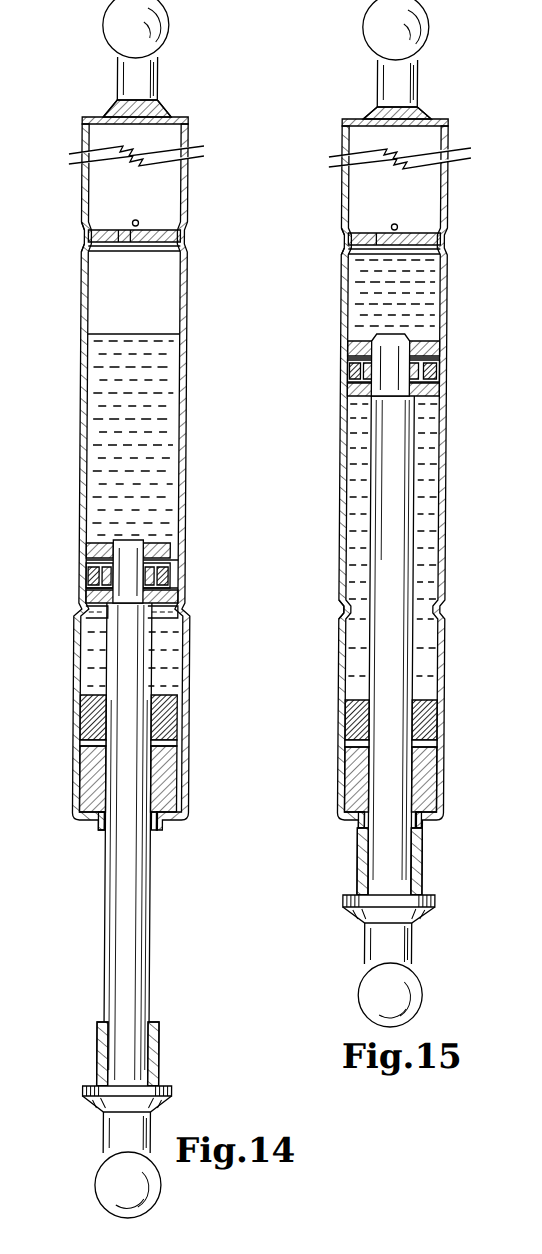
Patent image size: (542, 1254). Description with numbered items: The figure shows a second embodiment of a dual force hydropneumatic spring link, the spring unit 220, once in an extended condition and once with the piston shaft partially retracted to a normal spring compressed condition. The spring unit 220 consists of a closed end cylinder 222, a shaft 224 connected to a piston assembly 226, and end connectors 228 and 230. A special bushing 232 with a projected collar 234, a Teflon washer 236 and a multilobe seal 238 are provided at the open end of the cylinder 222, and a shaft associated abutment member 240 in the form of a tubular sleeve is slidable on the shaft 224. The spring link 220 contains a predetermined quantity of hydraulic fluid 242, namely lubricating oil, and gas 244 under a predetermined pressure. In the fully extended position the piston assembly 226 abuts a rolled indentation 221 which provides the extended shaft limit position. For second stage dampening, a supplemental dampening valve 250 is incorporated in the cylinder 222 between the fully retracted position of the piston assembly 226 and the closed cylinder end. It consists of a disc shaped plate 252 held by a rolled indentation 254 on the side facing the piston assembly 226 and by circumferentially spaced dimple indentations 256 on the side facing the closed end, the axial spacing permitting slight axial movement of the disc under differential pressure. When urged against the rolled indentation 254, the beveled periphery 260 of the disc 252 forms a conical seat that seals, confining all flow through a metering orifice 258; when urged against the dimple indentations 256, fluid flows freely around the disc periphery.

In FIG. 14, the spring unit 220 is at (198, 683).
In FIG. 15, the spring unit 220 is at (460, 688).
In FIG. 14, the rolled indentation 221 is at (188, 607).
In FIG. 15, the rolled indentation 221 is at (450, 612).
In FIG. 14, the closed end cylinder 222 is at (188, 463).
In FIG. 15, the closed end cylinder 222 is at (448, 438).
In FIG. 14, the shaft 224 is at (149, 920).
In FIG. 15, the shaft 224 is at (411, 552).
In FIG. 14, the piston assembly 226 is at (178, 551).
In FIG. 15, the piston assembly 226 is at (440, 347).
In FIG. 14, the end connector 228 is at (108, 1165).
In FIG. 15, the end connector 228 is at (366, 990).
In FIG. 14, the end connector 230 is at (169, 25).
In FIG. 15, the end connector 230 is at (429, 26).
In FIG. 14, the special bushing 232 is at (170, 778).
In FIG. 15, the special bushing 232 is at (436, 782).
In FIG. 14, the projected collar 234 is at (166, 826).
In FIG. 15, the projected collar 234 is at (427, 826).
In FIG. 14, the Teflon washer 236 is at (163, 742).
In FIG. 15, the Teflon washer 236 is at (432, 742).
In FIG. 14, the multilobe seal 238 is at (170, 715).
In FIG. 15, the multilobe seal 238 is at (437, 722).
In FIG. 14, the abutment member 240 is at (165, 1045).
In FIG. 15, the abutment member 240 is at (428, 864).
In FIG. 14, the hydraulic fluid 242 is at (168, 410).
In FIG. 15, the hydraulic fluid 242 is at (360, 298).
In FIG. 14, the gas 244 is at (174, 282).
In FIG. 15, the gas 244 is at (438, 188).
In FIG. 14, the supplemental dampening valve 250 is at (178, 229).
In FIG. 15, the supplemental dampening valve 250 is at (426, 229).
In FIG. 14, the disc shaped plate 252 is at (157, 230).
In FIG. 14, the rolled indentation 254 is at (89, 250).
In FIG. 15, the rolled indentation 254 is at (450, 248).
In FIG. 14, the dimple indentations 256 is at (84, 224).
In FIG. 15, the dimple indentations 256 is at (398, 223).
In FIG. 14, the metering orifice 258 is at (122, 229).
In FIG. 15, the metering orifice 258 is at (379, 233).
In FIG. 14, the periphery 260 is at (86, 238).
In FIG. 15, the periphery 260 is at (348, 250).